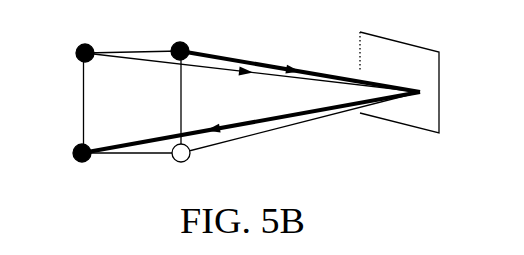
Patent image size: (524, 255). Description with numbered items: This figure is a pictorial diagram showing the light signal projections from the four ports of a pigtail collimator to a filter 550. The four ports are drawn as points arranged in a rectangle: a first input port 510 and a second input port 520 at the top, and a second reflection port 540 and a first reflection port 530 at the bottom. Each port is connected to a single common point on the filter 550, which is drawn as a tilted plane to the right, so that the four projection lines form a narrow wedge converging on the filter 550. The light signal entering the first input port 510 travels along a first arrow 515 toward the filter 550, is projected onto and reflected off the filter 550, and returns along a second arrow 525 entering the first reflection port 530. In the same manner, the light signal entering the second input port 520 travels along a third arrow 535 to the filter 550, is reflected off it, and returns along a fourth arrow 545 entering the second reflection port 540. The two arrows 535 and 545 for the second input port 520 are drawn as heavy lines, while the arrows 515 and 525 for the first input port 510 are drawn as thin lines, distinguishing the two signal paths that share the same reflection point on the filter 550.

The first input port 510 is at (78, 46).
The second input port 520 is at (184, 43).
The first reflection port 530 is at (188, 161).
The second reflection port 540 is at (73, 163).
The first arrow 515 is at (252, 78).
The second arrow 525 is at (252, 140).
The third arrow 535 is at (300, 58).
The fourth arrow 545 is at (251, 122).
The filter 550 is at (440, 92).